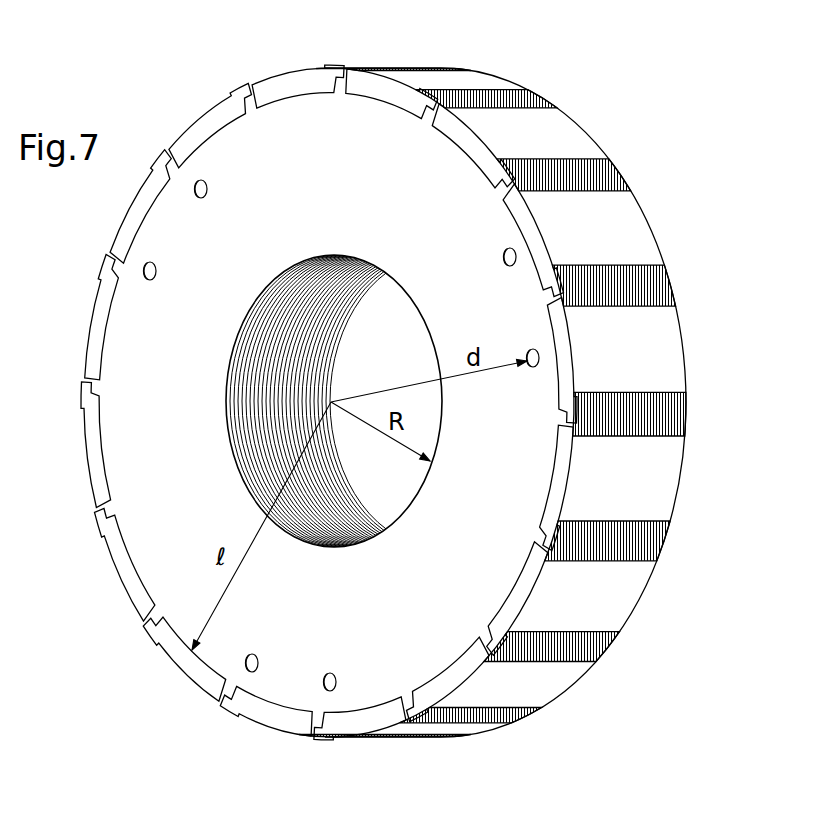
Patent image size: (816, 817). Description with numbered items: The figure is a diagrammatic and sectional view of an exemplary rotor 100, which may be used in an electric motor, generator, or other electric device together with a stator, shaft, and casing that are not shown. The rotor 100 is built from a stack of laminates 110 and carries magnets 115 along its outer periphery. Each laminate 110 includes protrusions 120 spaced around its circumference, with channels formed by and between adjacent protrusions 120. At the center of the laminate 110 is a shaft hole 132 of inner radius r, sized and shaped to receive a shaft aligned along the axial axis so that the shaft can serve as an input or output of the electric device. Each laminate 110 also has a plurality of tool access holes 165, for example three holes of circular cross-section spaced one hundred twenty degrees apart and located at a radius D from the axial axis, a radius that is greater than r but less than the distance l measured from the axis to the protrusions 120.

The rotor 100 is at (664, 119).
The laminate 110 is at (373, 175).
The magnet 115 is at (636, 221).
The protrusion 120 is at (337, 66).
The shaft hole 132 is at (408, 347).
The tool access hole 165 is at (197, 199).